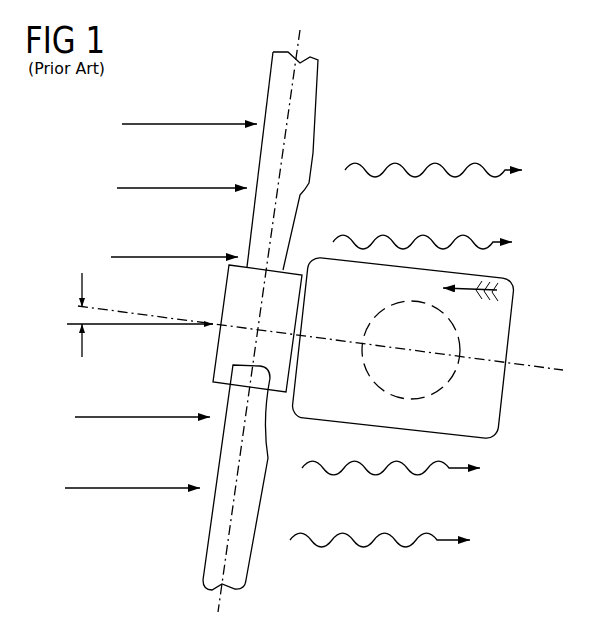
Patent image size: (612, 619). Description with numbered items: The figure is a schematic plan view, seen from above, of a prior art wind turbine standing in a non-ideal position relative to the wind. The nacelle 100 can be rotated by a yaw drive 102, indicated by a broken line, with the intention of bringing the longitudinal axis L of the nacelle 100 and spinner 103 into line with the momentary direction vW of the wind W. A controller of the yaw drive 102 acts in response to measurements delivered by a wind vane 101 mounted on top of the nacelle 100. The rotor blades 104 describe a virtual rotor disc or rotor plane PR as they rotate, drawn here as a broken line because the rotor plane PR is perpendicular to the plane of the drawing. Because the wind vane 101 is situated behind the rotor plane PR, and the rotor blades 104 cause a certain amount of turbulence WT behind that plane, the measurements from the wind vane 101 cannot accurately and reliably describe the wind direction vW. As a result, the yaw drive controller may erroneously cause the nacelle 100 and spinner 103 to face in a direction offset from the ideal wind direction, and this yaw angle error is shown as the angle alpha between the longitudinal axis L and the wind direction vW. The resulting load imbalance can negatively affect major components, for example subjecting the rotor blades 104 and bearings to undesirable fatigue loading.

The nacelle 100 is at (490, 393).
The wind vane 101 is at (486, 276).
The yaw drive 102 is at (372, 371).
The spinner 103 is at (226, 290).
The rotor blades 104 is at (310, 133).
The wind W is at (180, 120).
The turbulence WT is at (447, 162).
The wind direction VW is at (127, 365).
The rotor plane PR is at (233, 560).
The longitudinal axis L is at (543, 365).
The yaw angle error alpha is at (77, 312).